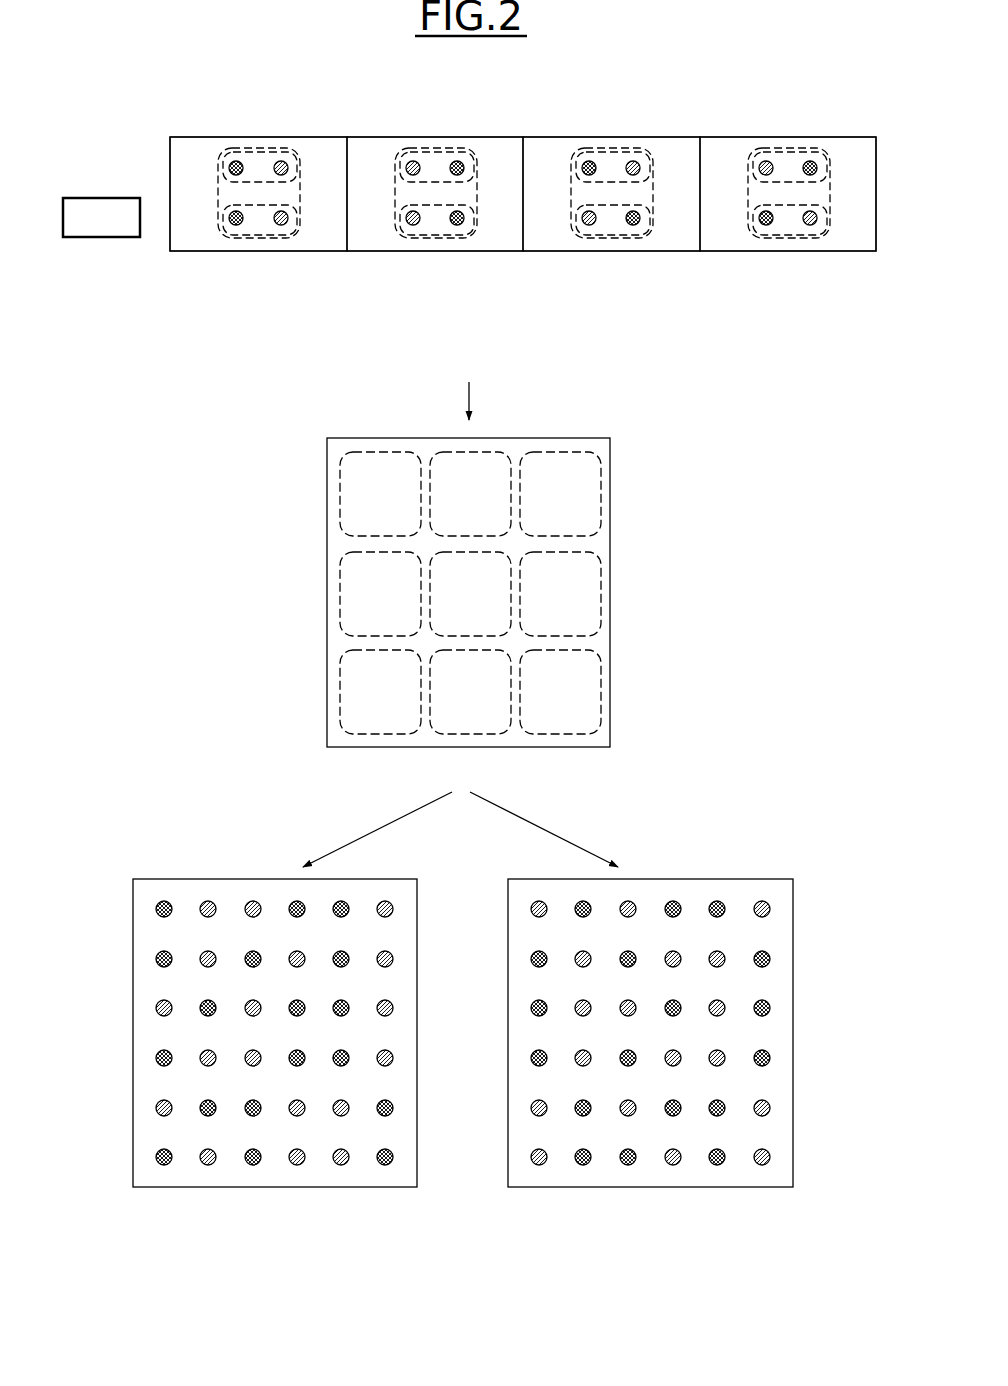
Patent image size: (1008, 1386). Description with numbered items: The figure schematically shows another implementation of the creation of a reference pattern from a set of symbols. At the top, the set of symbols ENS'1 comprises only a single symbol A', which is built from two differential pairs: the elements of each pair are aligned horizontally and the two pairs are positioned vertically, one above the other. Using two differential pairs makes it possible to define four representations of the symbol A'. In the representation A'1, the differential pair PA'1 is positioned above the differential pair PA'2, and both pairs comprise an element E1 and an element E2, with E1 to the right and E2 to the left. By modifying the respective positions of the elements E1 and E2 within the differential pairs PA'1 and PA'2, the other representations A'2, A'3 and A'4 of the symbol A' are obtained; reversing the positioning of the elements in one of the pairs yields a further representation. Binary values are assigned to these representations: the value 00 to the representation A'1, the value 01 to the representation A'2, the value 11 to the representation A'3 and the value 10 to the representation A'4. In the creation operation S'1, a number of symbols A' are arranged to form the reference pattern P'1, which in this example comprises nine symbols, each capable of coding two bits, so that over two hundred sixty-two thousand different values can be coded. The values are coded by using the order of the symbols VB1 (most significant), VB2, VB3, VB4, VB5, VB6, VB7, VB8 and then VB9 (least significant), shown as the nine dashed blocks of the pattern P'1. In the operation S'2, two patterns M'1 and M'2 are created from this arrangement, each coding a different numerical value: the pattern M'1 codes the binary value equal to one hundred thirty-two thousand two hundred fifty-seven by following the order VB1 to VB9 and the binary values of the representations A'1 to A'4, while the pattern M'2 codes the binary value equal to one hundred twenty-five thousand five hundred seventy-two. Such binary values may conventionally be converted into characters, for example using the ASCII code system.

The set of symbols ENS'1 is at (469, 194).
The symbol A' is at (196, 193).
The representation A'1 is at (258, 194).
The representation A'2 is at (435, 194).
The representation A'3 is at (611, 194).
The representation A'4 is at (788, 194).
The binary value 00 is at (258, 104).
The binary value 01 is at (435, 105).
The binary value 11 is at (614, 105).
The binary value 10 is at (790, 105).
The differential pair PA'1 is at (241, 136).
The differential pair PA'2 is at (197, 235).
The element E1 is at (240, 161).
The element E2 is at (285, 160).
The creation operation S'1 is at (441, 401).
The reference pattern P'1 is at (397, 592).
The symbol position VB1 is at (340, 695).
The symbol position VB2 is at (600, 524).
The symbol position VB3 is at (467, 734).
The symbol position VB4 is at (430, 577).
The symbol position VB5 is at (340, 497).
The symbol position VB6 is at (513, 470).
The symbol position VB7 is at (340, 620).
The symbol position VB8 is at (600, 598).
The symbol position VB9 is at (600, 697).
The coding operation S'2 is at (460, 829).
The pattern M'1 is at (237, 1033).
The pattern M'2 is at (689, 1033).